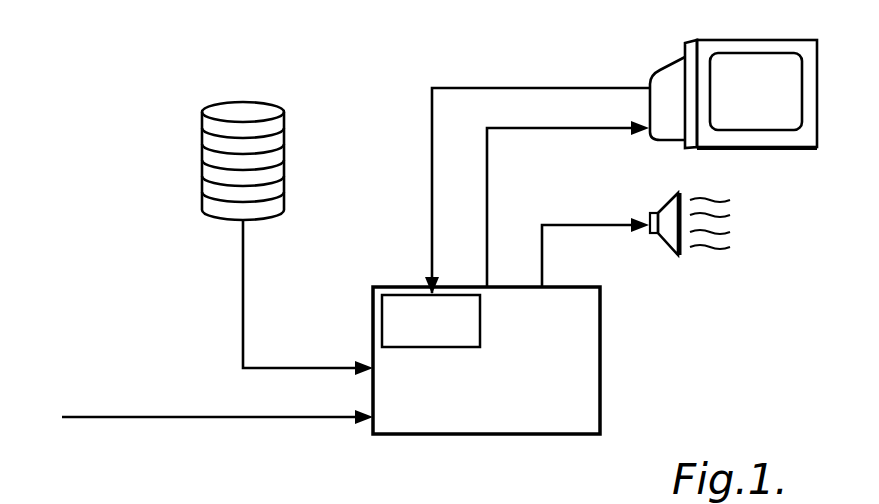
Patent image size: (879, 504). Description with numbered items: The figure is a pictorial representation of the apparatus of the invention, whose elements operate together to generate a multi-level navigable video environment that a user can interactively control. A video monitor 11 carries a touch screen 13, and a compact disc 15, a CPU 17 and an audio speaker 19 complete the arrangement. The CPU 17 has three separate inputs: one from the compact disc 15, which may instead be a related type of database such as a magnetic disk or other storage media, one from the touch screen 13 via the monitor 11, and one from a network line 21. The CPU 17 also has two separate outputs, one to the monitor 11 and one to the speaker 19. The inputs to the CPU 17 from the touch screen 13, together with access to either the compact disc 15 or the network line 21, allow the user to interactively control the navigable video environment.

The video monitor 11 is at (661, 68).
The touch screen 13 is at (780, 120).
The compact disc 15 is at (232, 100).
The CPU 17 is at (600, 358).
The audio speaker 19 is at (664, 212).
The network line 21 is at (297, 420).